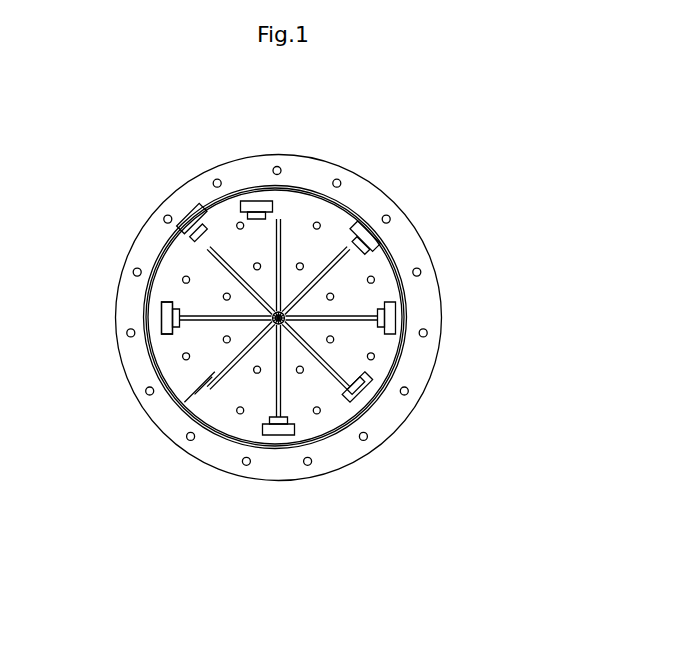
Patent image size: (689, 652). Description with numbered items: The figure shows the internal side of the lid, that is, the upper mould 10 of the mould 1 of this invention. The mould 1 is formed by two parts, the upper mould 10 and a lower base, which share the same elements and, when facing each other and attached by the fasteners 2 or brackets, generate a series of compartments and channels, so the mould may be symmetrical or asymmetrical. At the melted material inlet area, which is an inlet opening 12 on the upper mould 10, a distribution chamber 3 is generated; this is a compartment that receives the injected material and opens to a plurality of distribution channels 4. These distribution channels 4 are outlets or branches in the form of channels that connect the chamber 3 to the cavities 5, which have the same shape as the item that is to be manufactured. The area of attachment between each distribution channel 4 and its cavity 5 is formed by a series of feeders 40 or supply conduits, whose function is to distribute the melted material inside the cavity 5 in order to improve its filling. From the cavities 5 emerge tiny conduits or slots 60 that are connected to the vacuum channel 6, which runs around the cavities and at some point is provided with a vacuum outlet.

The mould 1 is at (313, 152).
The fasteners 2 is at (327, 218).
The distribution chamber 3 is at (275, 313).
The distribution channels 4 is at (330, 317).
The cavities 5 is at (189, 243).
The vacuum channel 6 is at (304, 187).
The upper mould 10 is at (418, 370).
The inlet opening 12 is at (288, 328).
The feeders 40 is at (170, 337).
The slots 60 is at (201, 211).